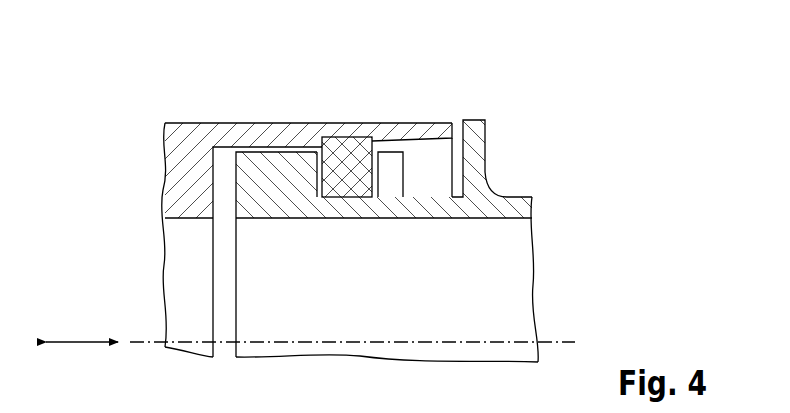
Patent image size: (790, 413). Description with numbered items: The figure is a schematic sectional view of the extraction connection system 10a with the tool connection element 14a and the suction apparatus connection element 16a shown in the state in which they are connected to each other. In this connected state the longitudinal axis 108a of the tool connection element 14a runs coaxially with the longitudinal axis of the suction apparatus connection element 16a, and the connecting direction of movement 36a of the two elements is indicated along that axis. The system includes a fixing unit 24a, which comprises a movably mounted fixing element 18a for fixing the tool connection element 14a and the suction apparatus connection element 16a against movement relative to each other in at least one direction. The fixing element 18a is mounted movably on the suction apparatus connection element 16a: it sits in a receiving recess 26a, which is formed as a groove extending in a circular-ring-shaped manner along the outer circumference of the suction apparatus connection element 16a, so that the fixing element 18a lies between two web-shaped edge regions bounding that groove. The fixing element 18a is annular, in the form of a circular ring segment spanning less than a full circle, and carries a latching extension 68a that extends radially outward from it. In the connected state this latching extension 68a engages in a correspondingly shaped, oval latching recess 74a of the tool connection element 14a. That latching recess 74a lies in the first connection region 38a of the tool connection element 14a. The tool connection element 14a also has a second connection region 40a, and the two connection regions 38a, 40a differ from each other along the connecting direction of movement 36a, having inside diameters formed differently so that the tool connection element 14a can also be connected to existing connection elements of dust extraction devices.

The extraction connection system 10a is at (588, 118).
The tool connection element 14a is at (182, 138).
The suction apparatus connection element 16a is at (527, 207).
The fixing element 18a is at (333, 150).
The fixing unit 24a is at (407, 113).
The receiving recess 26a is at (373, 172).
The connecting direction of movement 36a is at (87, 340).
The first connection region 38a is at (445, 163).
The second connection region 40a is at (183, 266).
The latching extension 68a is at (345, 150).
The latching recess 74a is at (300, 156).
The longitudinal axis of the tool connection element 108a is at (580, 340).